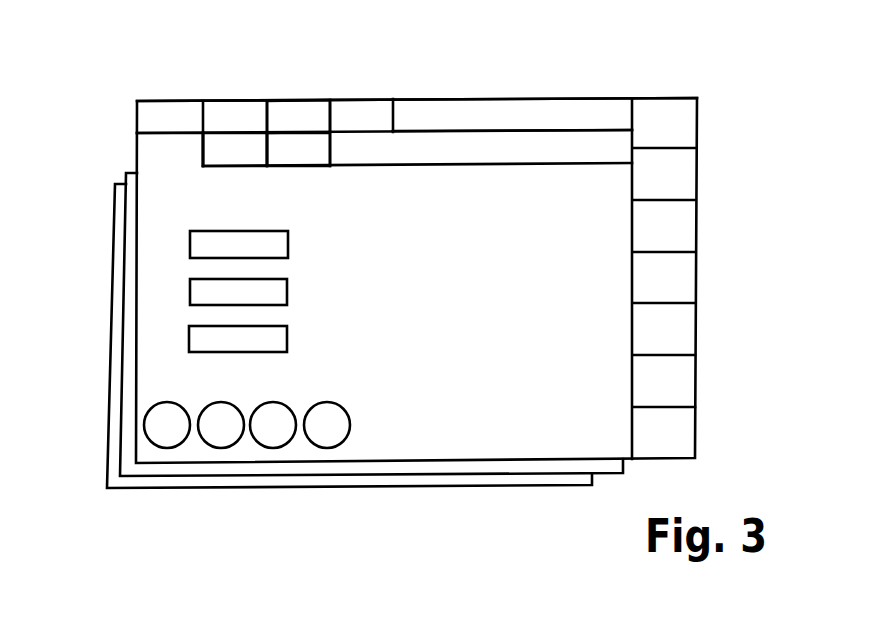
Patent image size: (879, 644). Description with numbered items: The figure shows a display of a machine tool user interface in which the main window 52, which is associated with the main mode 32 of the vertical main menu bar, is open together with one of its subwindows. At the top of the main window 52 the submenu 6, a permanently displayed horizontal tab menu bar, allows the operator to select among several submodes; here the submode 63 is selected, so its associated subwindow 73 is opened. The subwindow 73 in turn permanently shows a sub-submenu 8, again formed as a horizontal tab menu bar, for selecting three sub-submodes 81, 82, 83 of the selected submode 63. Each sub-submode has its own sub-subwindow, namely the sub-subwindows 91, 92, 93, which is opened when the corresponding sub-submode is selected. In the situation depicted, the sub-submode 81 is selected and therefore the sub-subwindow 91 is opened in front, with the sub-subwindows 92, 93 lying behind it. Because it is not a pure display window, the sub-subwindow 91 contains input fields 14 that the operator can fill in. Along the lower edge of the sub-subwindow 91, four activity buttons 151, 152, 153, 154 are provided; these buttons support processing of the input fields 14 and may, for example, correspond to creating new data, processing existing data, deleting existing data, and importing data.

The sub-subwindow 91 is at (137, 151).
The sub-subwindow 92 is at (123, 180).
The sub-subwindow 93 is at (115, 233).
The main window 52 is at (585, 96).
The submenu 6 is at (399, 118).
The subwindow 73 is at (512, 128).
The submode 63 is at (298, 117).
The sub-submenu 8 is at (334, 152).
The sub-submode 81 is at (170, 148).
The sub-submode 82 is at (235, 148).
The sub-submode 83 is at (298, 148).
The main mode 32 is at (663, 279).
The input fields 14 is at (280, 243).
The activity button 151 is at (167, 425).
The activity button 152 is at (221, 425).
The activity button 153 is at (273, 425).
The activity button 154 is at (327, 425).